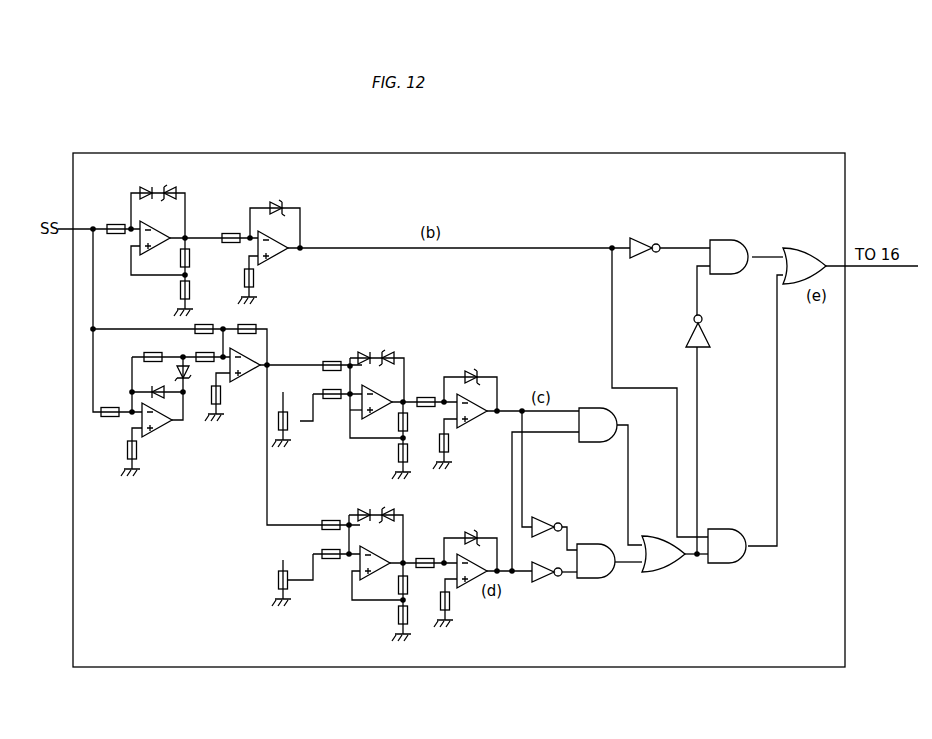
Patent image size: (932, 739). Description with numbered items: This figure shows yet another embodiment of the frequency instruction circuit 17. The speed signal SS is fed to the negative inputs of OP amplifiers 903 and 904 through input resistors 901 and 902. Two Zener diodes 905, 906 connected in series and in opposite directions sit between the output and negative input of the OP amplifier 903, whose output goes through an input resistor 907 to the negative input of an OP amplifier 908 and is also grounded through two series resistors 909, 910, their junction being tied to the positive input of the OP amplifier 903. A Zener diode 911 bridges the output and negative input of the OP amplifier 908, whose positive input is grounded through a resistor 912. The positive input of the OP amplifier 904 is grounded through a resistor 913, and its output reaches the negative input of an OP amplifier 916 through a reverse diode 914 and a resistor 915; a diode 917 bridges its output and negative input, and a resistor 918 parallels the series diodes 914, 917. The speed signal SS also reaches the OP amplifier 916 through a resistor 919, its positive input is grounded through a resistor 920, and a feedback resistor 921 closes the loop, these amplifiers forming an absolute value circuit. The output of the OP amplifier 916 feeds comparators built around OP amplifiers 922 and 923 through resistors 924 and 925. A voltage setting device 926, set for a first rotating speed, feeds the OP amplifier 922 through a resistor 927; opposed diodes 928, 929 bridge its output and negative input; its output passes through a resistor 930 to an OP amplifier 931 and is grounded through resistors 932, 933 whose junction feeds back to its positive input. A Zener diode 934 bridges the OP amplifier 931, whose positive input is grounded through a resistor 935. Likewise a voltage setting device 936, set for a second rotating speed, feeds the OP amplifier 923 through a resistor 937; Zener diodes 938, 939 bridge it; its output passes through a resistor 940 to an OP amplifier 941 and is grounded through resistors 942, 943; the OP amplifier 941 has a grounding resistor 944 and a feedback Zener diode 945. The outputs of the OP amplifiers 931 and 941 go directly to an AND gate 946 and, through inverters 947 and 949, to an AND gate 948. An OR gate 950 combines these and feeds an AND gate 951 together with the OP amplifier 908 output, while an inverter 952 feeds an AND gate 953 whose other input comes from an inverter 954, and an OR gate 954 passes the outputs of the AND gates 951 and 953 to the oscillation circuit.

The frequency instruction circuit 17 is at (548, 153).
The input resistor 901 is at (112, 224).
The input resistor 902 is at (108, 416).
The OP amplifier 903 is at (158, 250).
The OP amplifier 904 is at (158, 432).
The Zener diode 905 is at (147, 190).
The Zener diode 906 is at (174, 190).
The input resistor 907 is at (231, 232).
The OP amplifier 908 is at (275, 258).
The resistor 909 is at (190, 261).
The resistor 910 is at (190, 290).
The Zener diode 911 is at (279, 204).
The resistor 912 is at (254, 285).
The resistor 913 is at (130, 460).
The reverse diode 914 is at (182, 370).
The resistor 915 is at (196, 357).
The OP amplifier 916 is at (248, 372).
The diode 917 is at (148, 392).
The resistor 918 is at (144, 357).
The resistor 919 is at (195, 329).
The resistor 920 is at (216, 400).
The feedback resistor 921 is at (258, 329).
The OP amplifier 922 is at (378, 412).
The OP amplifier 923 is at (372, 580).
The resistor 924 is at (330, 361).
The resistor 925 is at (331, 520).
The voltage setting device 926 is at (290, 425).
The resistor 927 is at (330, 399).
The diode 928 is at (365, 352).
The diode 929 is at (392, 355).
The resistor 930 is at (428, 398).
The OP amplifier 931 is at (475, 424).
The resistor 932 is at (407, 424).
The resistor 933 is at (408, 453).
The Zener diode 934 is at (473, 375).
The resistor 935 is at (449, 450).
The voltage setting device 936 is at (278, 590).
The resistor 937 is at (330, 559).
The Zener diode 938 is at (365, 512).
The Zener diode 939 is at (390, 516).
The resistor 940 is at (426, 558).
The OP amplifier 941 is at (471, 584).
The resistor 942 is at (410, 588).
The resistor 943 is at (398, 618).
The resistor 944 is at (450, 608).
The Zener diode 945 is at (472, 536).
The AND gate 946 is at (590, 442).
The inverter 947 is at (548, 522).
The AND gate 948 is at (588, 578).
The inverter 949 is at (544, 582).
The OR gate 950 is at (665, 573).
The AND gate 951 is at (724, 562).
The inverter 952 is at (644, 237).
The AND gate 953 is at (726, 240).
The OR gate 954 is at (804, 284).